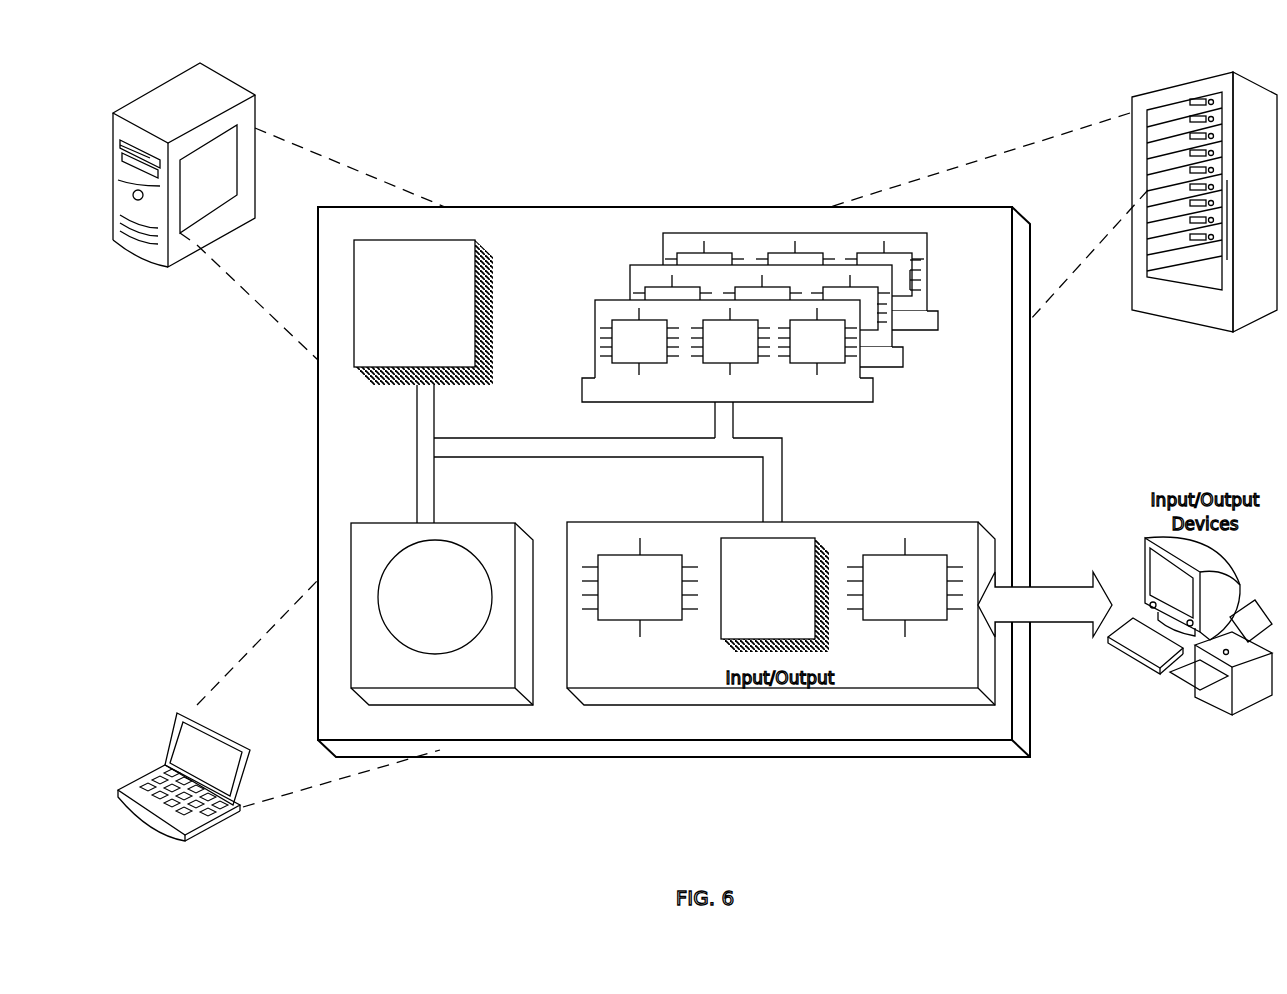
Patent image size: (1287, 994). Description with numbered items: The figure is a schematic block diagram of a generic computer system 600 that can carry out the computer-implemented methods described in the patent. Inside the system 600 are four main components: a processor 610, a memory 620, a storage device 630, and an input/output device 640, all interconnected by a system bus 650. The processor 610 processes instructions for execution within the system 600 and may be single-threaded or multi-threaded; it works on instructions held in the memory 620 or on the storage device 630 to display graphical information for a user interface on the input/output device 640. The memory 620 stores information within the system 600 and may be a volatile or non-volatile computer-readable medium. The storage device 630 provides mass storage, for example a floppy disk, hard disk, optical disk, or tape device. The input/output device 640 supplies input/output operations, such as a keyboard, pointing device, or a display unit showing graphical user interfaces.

The computer system 600 is at (498, 88).
The processor 610 is at (480, 245).
The memory 620 is at (936, 370).
The storage device 630 is at (402, 522).
The input/output device 640 is at (1145, 547).
The system bus 650 is at (597, 458).